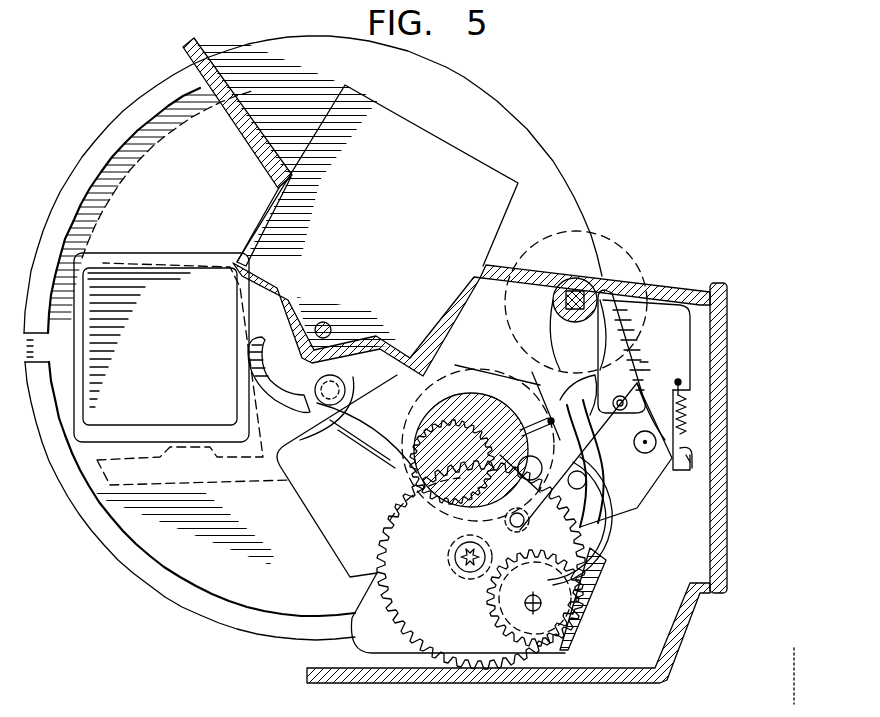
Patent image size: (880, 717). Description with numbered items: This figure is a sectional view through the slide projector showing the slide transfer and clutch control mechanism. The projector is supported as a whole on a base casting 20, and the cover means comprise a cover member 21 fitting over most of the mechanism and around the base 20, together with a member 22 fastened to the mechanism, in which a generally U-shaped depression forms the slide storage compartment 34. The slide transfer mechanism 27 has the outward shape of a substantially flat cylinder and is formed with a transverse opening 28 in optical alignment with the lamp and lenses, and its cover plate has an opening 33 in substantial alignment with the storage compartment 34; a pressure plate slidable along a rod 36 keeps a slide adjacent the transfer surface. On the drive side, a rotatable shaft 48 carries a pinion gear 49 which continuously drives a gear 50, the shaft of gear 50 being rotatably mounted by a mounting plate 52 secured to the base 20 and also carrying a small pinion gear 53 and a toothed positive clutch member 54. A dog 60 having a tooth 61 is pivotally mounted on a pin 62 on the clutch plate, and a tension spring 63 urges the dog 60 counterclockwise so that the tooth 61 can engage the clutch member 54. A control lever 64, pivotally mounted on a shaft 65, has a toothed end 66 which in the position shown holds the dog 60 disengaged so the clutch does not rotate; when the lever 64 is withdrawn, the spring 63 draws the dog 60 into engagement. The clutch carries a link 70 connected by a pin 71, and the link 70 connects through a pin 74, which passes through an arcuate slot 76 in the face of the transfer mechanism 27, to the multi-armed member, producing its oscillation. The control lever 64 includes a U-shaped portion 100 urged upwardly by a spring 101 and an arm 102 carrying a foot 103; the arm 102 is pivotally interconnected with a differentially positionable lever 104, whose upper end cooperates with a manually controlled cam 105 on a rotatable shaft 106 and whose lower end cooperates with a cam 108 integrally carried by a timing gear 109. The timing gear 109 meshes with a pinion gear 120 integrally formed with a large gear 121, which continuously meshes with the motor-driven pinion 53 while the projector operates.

The base casting 20 is at (688, 648).
The cover member 21 is at (720, 402).
The cover member 22 is at (665, 292).
The slide transfer mechanism 27 is at (140, 111).
The transverse opening 28 is at (161, 347).
The opening 33 is at (377, 222).
The slide storage compartment 34 is at (262, 233).
The rod 36 is at (332, 326).
The rotatable shaft 48 is at (580, 598).
The pinion gear 49 is at (573, 622).
The gear 50 is at (617, 503).
The mounting plate 52 is at (677, 337).
The pinion gear 53 is at (506, 521).
The toothed positive clutch member 54 is at (484, 462).
The dog 60 is at (592, 517).
The tooth 61 is at (582, 525).
The pin 62 is at (482, 577).
The tension spring 63 is at (548, 420).
The control lever 64 is at (530, 372).
The shaft 65 is at (652, 448).
The toothed end 66 is at (572, 400).
The link 70 is at (353, 449).
The pin 71 is at (587, 480).
The pin 74 is at (345, 386).
The arcuate slot 76 is at (279, 375).
The U-shaped portion 100 is at (692, 460).
The spring 101 is at (686, 423).
The arm 102 is at (686, 377).
The foot 103 is at (661, 357).
The differentially positionable lever 104 is at (613, 332).
The manually controlled cam 105 is at (590, 282).
The rotatable shaft 106 is at (577, 298).
The cam 108 is at (478, 445).
The timing gear 109 is at (380, 490).
The pinion gear 120 is at (455, 558).
The large gear 121 is at (380, 537).